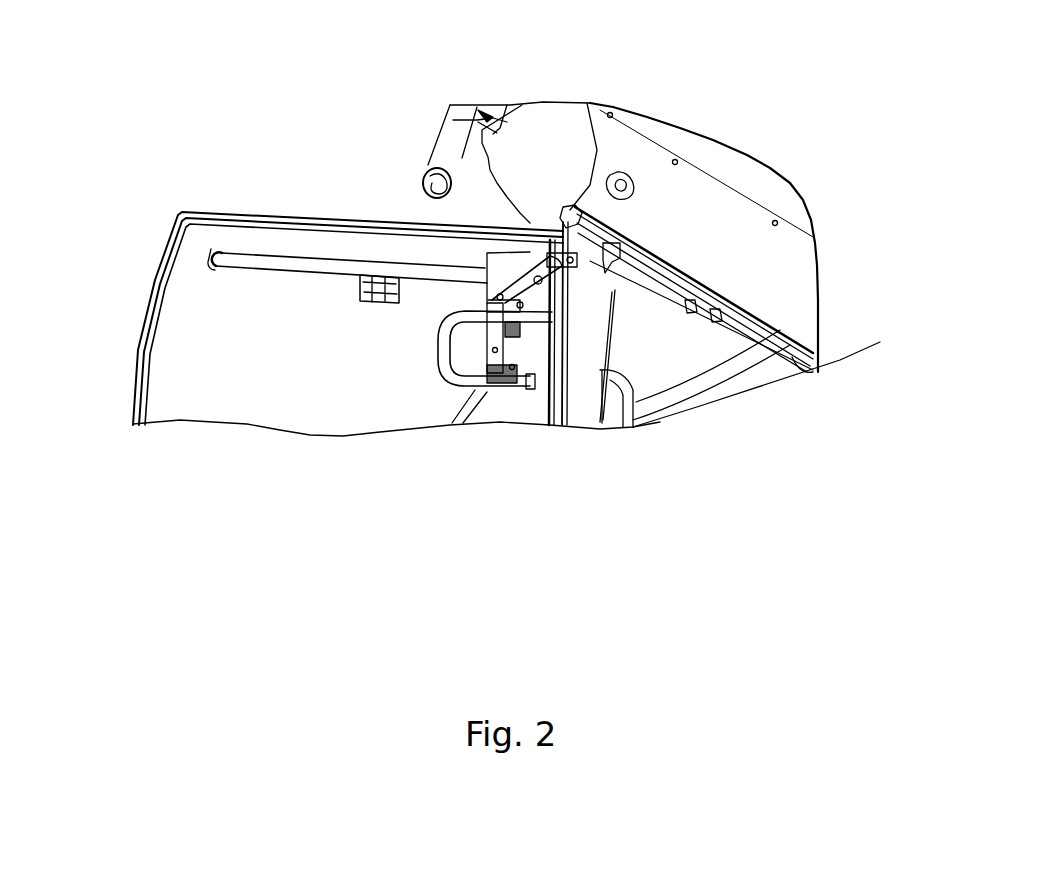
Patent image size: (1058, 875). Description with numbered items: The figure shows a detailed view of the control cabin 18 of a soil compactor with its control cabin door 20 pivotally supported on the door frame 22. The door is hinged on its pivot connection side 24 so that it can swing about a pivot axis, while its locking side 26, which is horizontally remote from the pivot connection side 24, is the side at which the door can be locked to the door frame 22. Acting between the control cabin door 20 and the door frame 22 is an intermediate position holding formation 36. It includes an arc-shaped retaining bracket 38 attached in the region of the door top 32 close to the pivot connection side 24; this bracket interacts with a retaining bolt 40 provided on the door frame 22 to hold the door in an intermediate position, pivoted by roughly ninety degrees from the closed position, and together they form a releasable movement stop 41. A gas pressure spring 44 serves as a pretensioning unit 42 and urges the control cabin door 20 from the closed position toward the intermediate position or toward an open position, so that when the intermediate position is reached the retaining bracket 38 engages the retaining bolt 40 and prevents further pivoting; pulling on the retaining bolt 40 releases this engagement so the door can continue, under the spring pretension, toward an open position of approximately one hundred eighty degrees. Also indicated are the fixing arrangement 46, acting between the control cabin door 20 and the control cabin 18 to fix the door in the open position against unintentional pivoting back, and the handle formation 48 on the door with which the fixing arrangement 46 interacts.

The control cabin 18 is at (808, 200).
The control cabin door 20 is at (303, 436).
The door frame 22 is at (788, 377).
The pivot connection side 24 is at (538, 410).
The locking side 26 is at (160, 386).
The door top 32 is at (287, 237).
The intermediate position holding formation 36 is at (483, 250).
The retaining bracket 38 is at (637, 257).
The retaining bolt 40 is at (665, 287).
The releasable movement stop 41 is at (665, 293).
The pretensioning unit 42 is at (678, 330).
The gas pressure spring 44 is at (675, 295).
The fixing arrangement 46 is at (370, 333).
The handle formation 48 is at (443, 405).